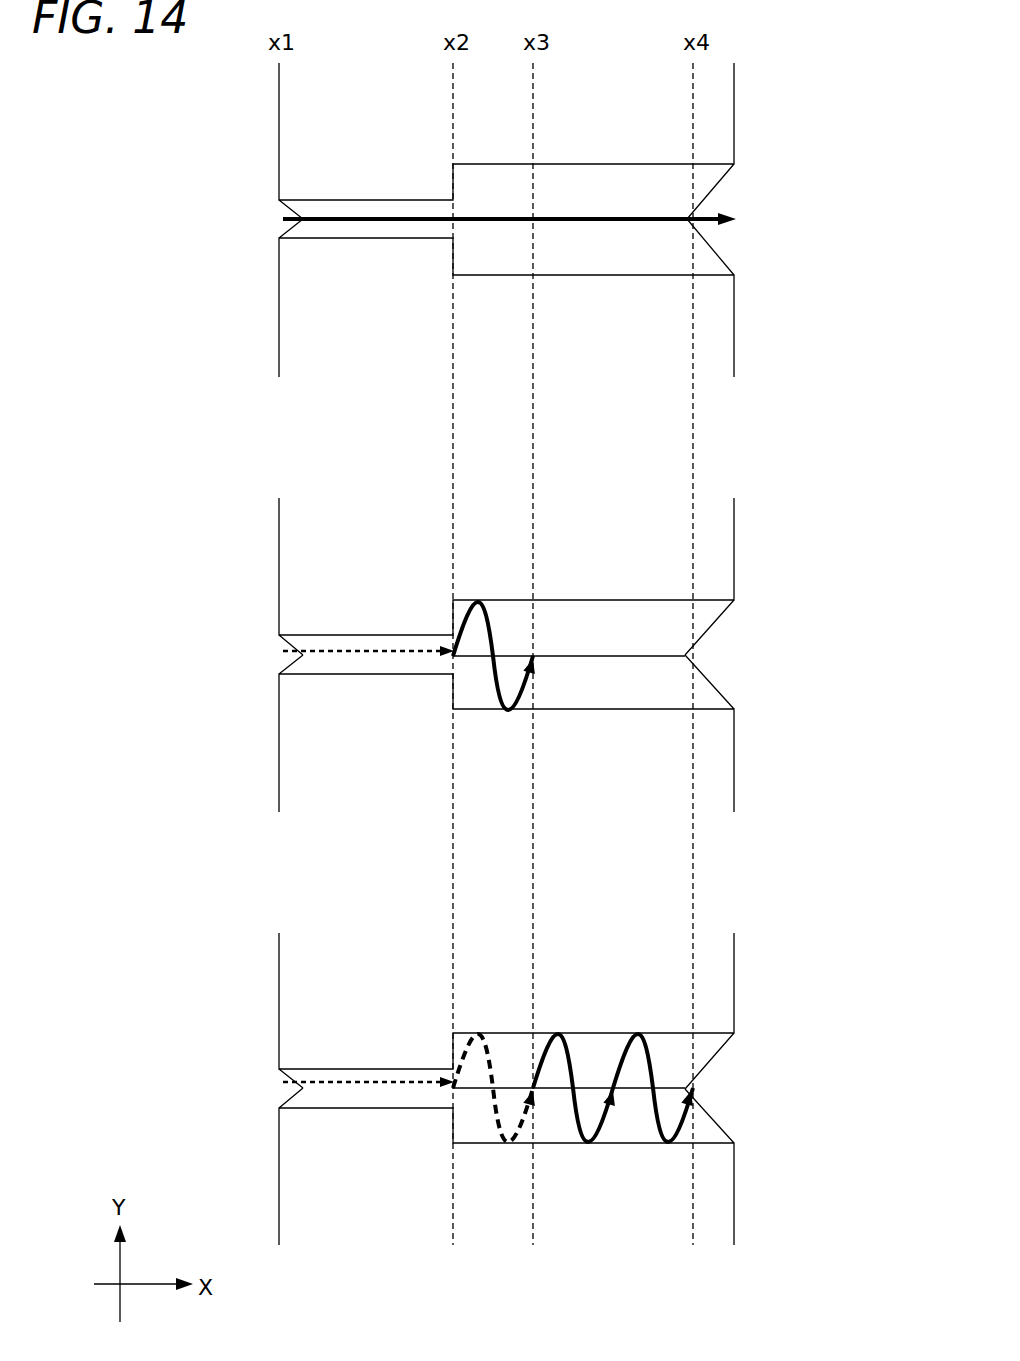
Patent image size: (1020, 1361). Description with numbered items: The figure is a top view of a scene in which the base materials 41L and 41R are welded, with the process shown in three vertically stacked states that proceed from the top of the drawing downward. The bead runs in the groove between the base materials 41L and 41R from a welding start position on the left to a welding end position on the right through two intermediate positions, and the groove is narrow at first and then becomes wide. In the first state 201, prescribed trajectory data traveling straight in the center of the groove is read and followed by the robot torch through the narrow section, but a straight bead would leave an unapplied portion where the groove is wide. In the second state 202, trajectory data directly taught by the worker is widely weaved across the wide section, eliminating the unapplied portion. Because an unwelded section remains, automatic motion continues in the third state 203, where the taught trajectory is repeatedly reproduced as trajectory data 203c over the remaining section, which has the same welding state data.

The base material 41L is at (279, 130).
The base material 41R is at (279, 315).
The trajectory data 203c is at (573, 1060).
The first state 201 is at (590, 218).
The second state 202 is at (590, 656).
The third state 203 is at (589, 1093).